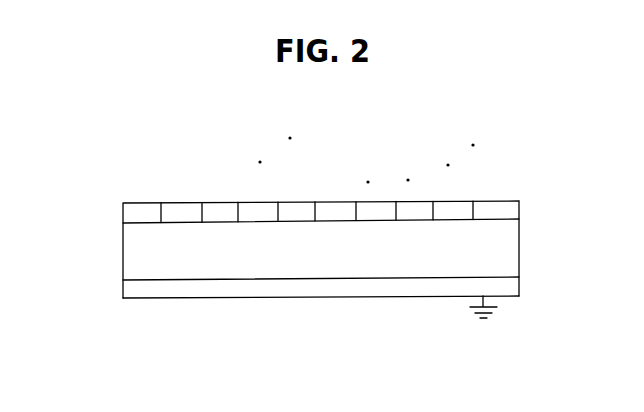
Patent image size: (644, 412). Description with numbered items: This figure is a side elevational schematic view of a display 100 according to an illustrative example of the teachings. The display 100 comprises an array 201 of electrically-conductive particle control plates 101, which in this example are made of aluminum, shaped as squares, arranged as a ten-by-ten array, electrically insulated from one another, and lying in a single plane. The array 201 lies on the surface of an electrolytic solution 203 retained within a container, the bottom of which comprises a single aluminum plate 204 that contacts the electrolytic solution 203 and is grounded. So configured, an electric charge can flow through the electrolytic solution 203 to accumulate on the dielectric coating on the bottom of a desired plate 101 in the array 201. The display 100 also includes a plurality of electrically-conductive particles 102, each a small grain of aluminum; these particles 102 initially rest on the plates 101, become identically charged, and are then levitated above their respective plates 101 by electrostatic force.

The display 100 is at (331, 332).
The electrically-conductive particle control plate 101 is at (257, 207).
The electrically-conductive particle 102 is at (332, 158).
The array 201 is at (123, 213).
The electrolytic solution 203 is at (135, 255).
The aluminum plate 204 is at (155, 298).